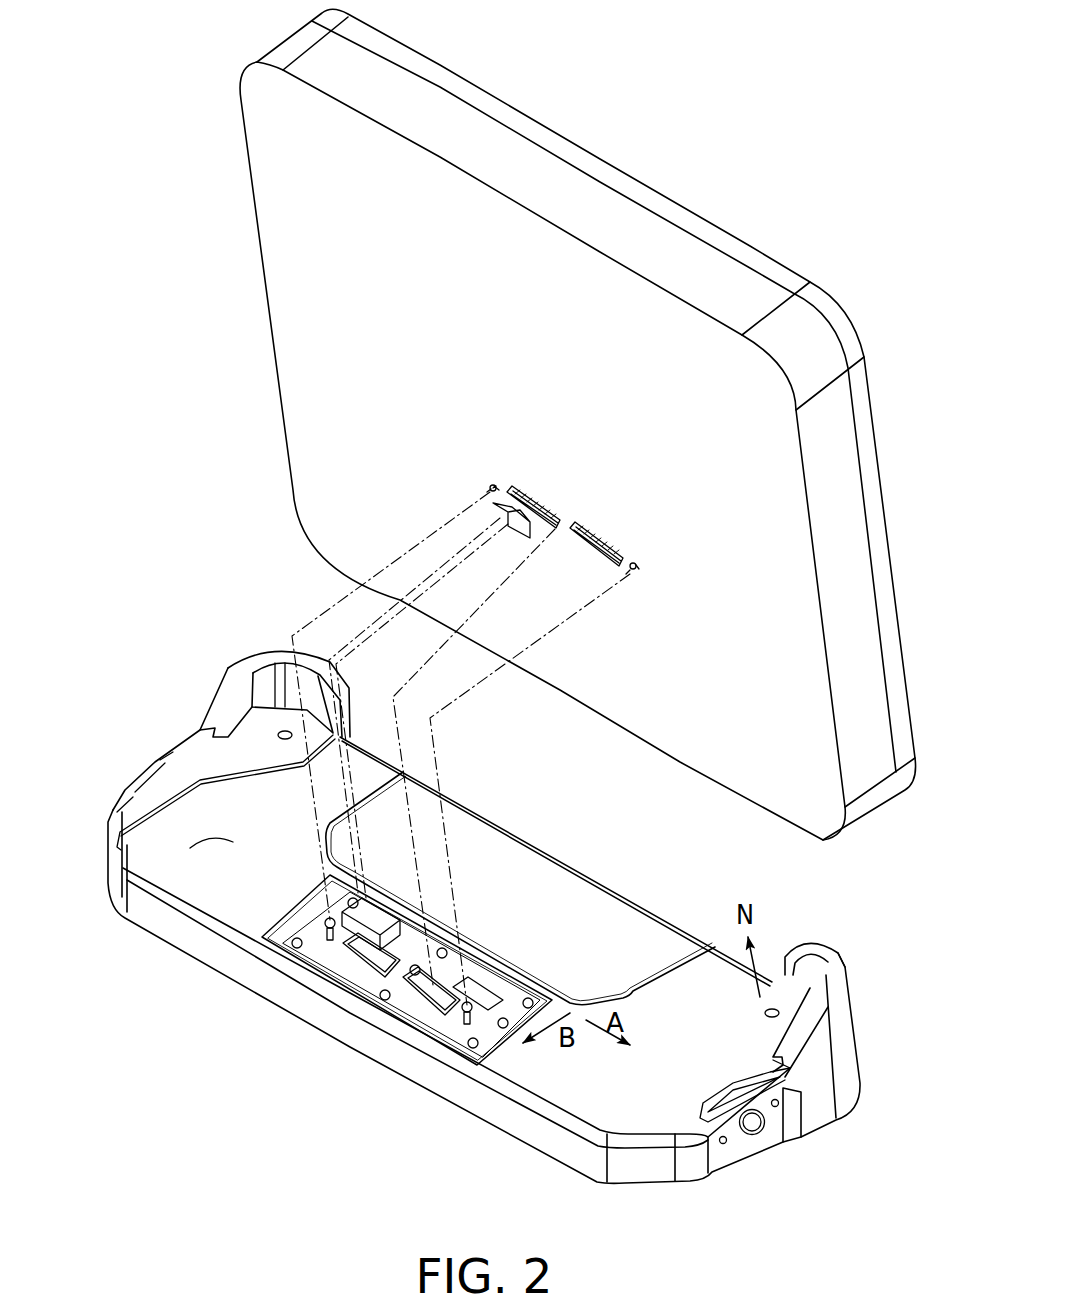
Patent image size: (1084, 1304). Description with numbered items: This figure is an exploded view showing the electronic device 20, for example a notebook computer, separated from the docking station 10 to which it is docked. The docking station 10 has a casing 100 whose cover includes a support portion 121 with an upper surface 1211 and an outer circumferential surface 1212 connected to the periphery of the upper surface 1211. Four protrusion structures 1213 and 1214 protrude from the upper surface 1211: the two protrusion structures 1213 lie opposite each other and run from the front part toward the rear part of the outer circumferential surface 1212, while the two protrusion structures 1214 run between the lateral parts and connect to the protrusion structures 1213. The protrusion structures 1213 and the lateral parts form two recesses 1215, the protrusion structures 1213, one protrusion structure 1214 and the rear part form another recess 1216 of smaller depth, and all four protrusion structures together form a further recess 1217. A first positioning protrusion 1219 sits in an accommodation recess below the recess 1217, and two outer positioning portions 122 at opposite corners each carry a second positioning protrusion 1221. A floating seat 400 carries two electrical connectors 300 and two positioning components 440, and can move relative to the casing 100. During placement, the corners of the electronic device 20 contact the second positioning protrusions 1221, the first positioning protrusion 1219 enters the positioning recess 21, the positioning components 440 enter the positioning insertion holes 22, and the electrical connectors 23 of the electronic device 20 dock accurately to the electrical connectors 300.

The docking station 10 is at (150, 690).
The electronic device 20 is at (555, 175).
The positioning recess 21 is at (503, 518).
The positioning insertion holes 22 is at (488, 491).
The electrical connectors 23 is at (608, 556).
The casing 100 is at (172, 947).
The support portion 121 is at (523, 877).
The outer positioning portions 122 is at (228, 665).
The upper surface 1211 is at (773, 1062).
The outer circumferential surface 1212 is at (520, 1120).
The protrusion structures 1213 is at (140, 918).
The protrusion structures 1214 is at (393, 1017).
The recesses 1215 is at (214, 764).
The recess 1216 is at (573, 915).
The recess 1217 is at (290, 902).
The first positioning protrusion 1219 is at (378, 900).
The second positioning protrusion 1221 is at (277, 657).
The electrical connectors 300 is at (373, 958).
The floating seat 400 is at (319, 967).
The positioning components 440 is at (327, 932).